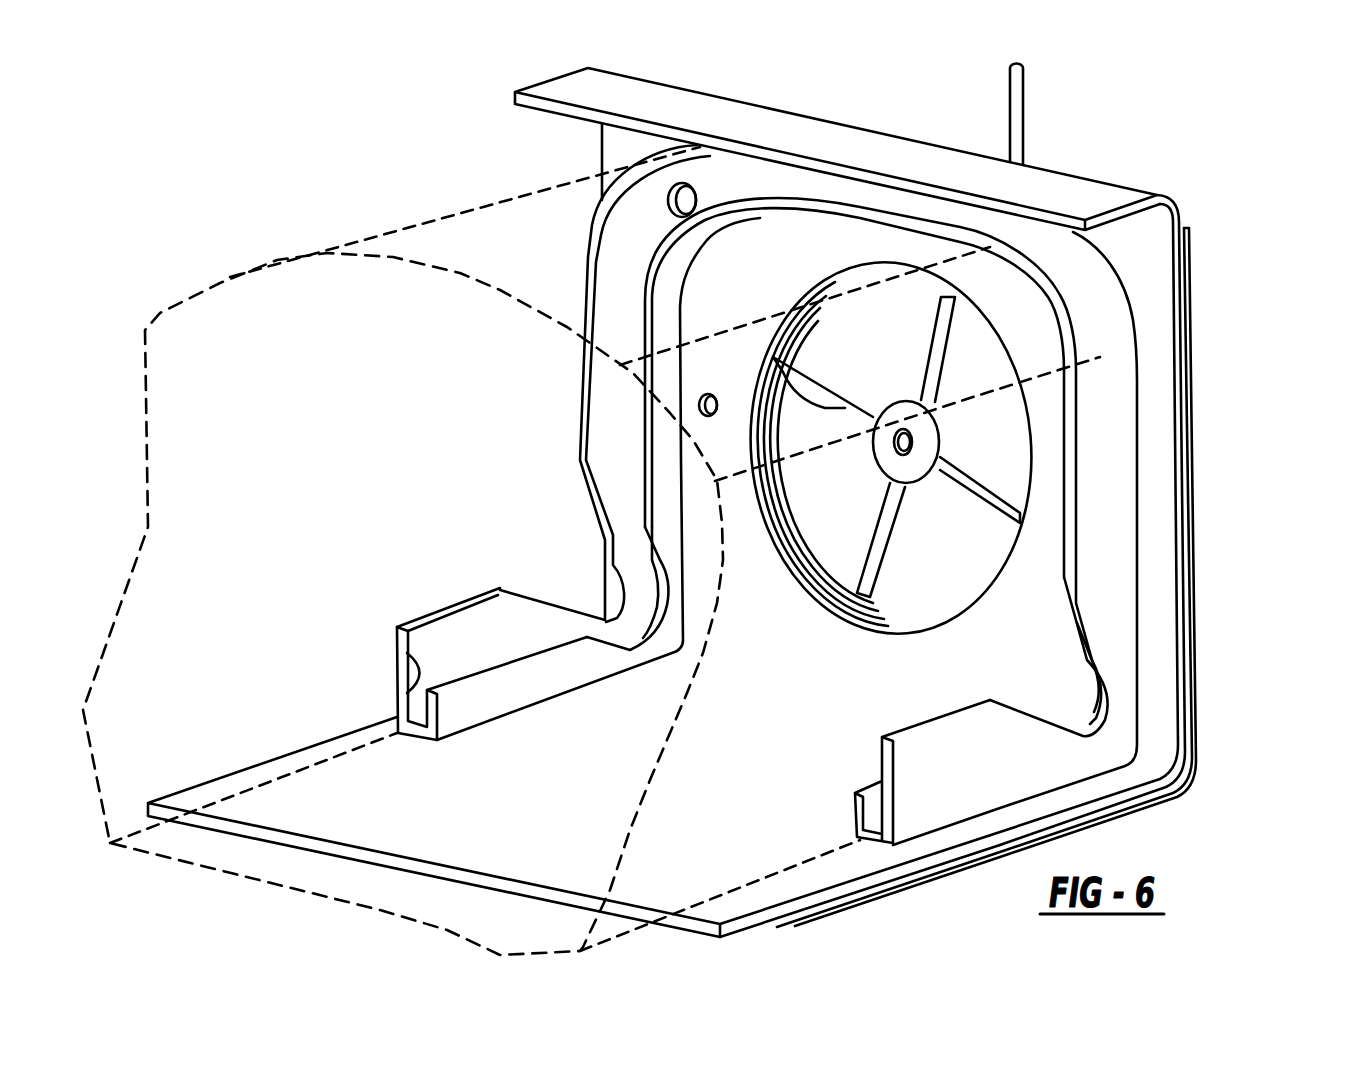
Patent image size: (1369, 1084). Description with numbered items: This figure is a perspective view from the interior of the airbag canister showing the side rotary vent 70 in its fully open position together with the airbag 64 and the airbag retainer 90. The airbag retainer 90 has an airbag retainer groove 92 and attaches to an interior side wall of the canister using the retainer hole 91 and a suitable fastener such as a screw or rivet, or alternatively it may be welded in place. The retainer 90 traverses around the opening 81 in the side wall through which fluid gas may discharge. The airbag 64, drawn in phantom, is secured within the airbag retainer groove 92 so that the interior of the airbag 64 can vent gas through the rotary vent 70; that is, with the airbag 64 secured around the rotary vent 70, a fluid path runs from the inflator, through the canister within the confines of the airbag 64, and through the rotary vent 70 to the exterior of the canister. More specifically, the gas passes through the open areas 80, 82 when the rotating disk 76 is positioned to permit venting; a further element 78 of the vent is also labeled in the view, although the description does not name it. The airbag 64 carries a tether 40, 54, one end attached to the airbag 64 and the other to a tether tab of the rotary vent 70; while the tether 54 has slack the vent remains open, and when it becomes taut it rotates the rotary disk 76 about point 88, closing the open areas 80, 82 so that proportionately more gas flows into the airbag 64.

The tether 40 is at (1095, 115).
The tether 54 is at (1027, 117).
The airbag 64 is at (222, 276).
The rotary vent 70 is at (745, 501).
The rotating disk 76 is at (963, 374).
The fan 78 is at (1016, 370).
The open area 80 is at (832, 449).
The opening 81 is at (860, 556).
The open area 82 is at (966, 424).
The point 88 is at (903, 427).
The airbag retainer 90 is at (411, 616).
The retainer hole 91 is at (682, 213).
The airbag retainer groove 92 is at (410, 663).